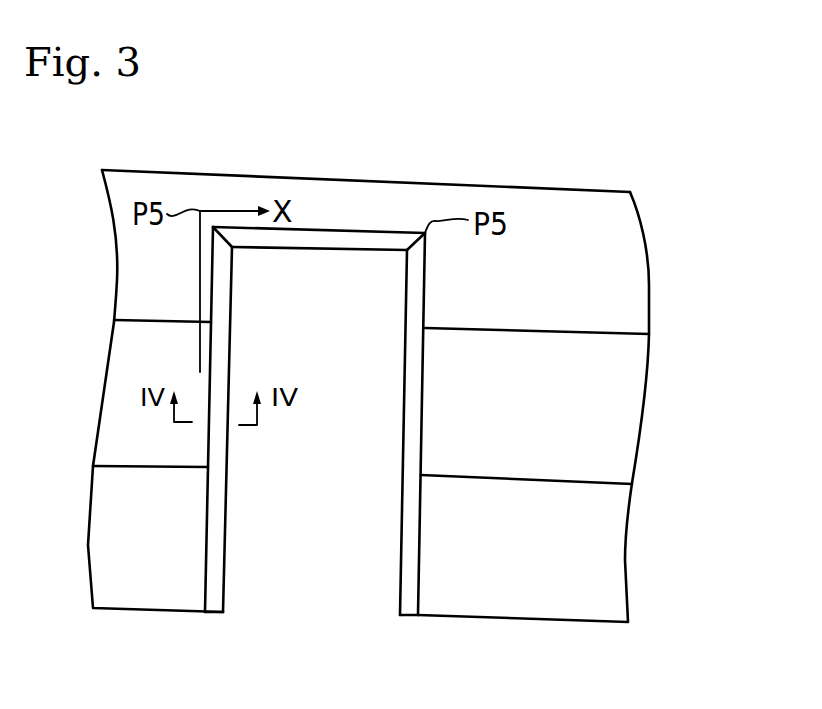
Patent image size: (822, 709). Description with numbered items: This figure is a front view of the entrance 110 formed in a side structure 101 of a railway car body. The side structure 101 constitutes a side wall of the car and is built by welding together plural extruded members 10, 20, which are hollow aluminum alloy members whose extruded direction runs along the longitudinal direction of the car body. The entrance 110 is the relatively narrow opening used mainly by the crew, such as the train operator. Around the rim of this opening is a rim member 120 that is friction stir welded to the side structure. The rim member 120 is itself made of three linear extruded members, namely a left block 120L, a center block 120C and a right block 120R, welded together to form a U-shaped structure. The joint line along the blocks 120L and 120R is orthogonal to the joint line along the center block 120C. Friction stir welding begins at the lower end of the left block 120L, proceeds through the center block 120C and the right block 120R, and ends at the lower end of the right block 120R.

The side structure 101 is at (473, 165).
The entrance 110 is at (262, 572).
The extruded member 10 is at (630, 279).
The extruded member 20 is at (140, 353).
The rim member 120 is at (315, 399).
The left block 120L is at (232, 340).
The center block 120C is at (320, 242).
The right block 120R is at (415, 503).